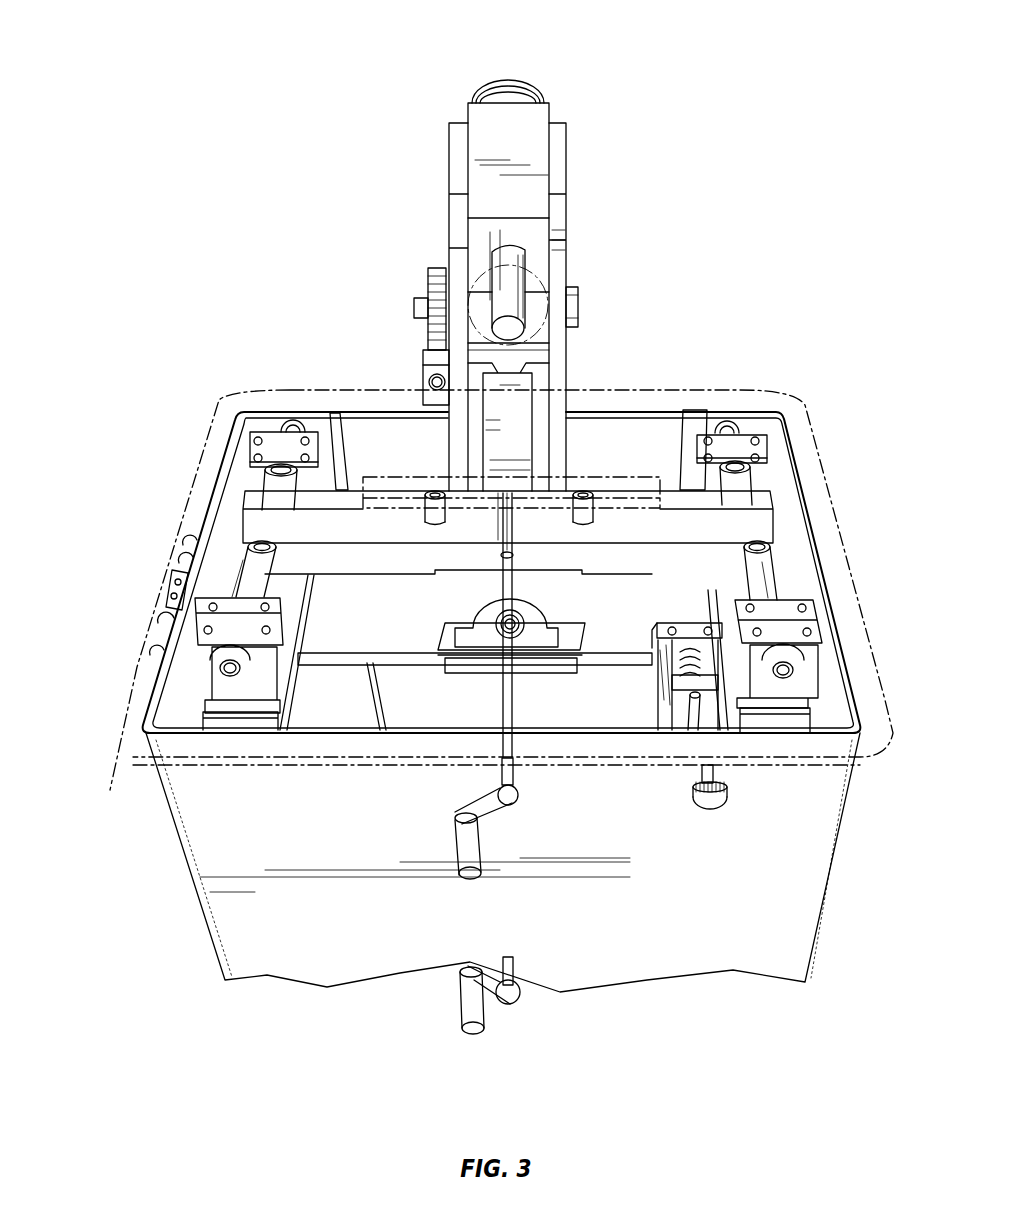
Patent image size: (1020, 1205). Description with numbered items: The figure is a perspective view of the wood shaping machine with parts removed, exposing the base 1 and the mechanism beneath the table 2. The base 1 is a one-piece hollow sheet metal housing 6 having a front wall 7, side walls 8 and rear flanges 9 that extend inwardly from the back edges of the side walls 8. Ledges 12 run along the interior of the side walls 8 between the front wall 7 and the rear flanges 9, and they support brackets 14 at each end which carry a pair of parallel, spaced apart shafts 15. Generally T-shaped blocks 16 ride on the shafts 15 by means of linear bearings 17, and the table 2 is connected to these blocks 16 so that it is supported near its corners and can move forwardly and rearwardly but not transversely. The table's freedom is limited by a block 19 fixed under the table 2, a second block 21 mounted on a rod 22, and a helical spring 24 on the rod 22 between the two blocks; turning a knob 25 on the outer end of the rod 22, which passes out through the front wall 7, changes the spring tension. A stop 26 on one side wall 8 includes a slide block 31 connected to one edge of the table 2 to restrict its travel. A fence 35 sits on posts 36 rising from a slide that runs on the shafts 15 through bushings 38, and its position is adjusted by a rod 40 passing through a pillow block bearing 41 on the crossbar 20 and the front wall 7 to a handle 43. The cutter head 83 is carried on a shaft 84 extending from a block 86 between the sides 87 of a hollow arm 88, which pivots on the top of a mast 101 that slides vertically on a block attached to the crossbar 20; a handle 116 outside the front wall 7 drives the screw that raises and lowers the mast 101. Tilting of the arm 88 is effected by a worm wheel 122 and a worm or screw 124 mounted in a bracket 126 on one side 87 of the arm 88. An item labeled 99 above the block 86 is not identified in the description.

The base 1 is at (162, 873).
The table 2 is at (122, 758).
The sheet metal housing 6 is at (840, 838).
The front wall 7 is at (327, 832).
The side walls 8 is at (240, 503).
The rear flanges 9 is at (295, 416).
The ledges 12 is at (230, 720).
The brackets 14 is at (262, 440).
The shafts 15 is at (272, 578).
The T-shaped blocks 16 is at (270, 447).
The linear bearings 17 is at (262, 490).
The block 19 is at (652, 660).
The crossbar 20 is at (418, 640).
The second block 21 is at (682, 695).
The rod 22 is at (696, 730).
The helical spring 24 is at (688, 624).
The knob 25 is at (722, 800).
The stop 26 is at (142, 590).
The block 31 is at (170, 618).
The fence 35 is at (628, 480).
The posts 36 is at (440, 510).
The bushings 38 is at (255, 553).
The rod 40 is at (515, 680).
The pillow block bearing 41 is at (540, 625).
The handle 43 is at (517, 795).
The cutter head 83 is at (560, 302).
The shaft 84 is at (500, 270).
The block 86 is at (540, 103).
The sides 87 is at (450, 153).
The hollow arm 88 is at (566, 122).
The spring loops 99 is at (498, 86).
The mast 101 is at (540, 373).
The handle 116 is at (513, 968).
The worm wheel 122 is at (428, 272).
The worm or screw 124 is at (428, 368).
The bracket 126 is at (430, 395).